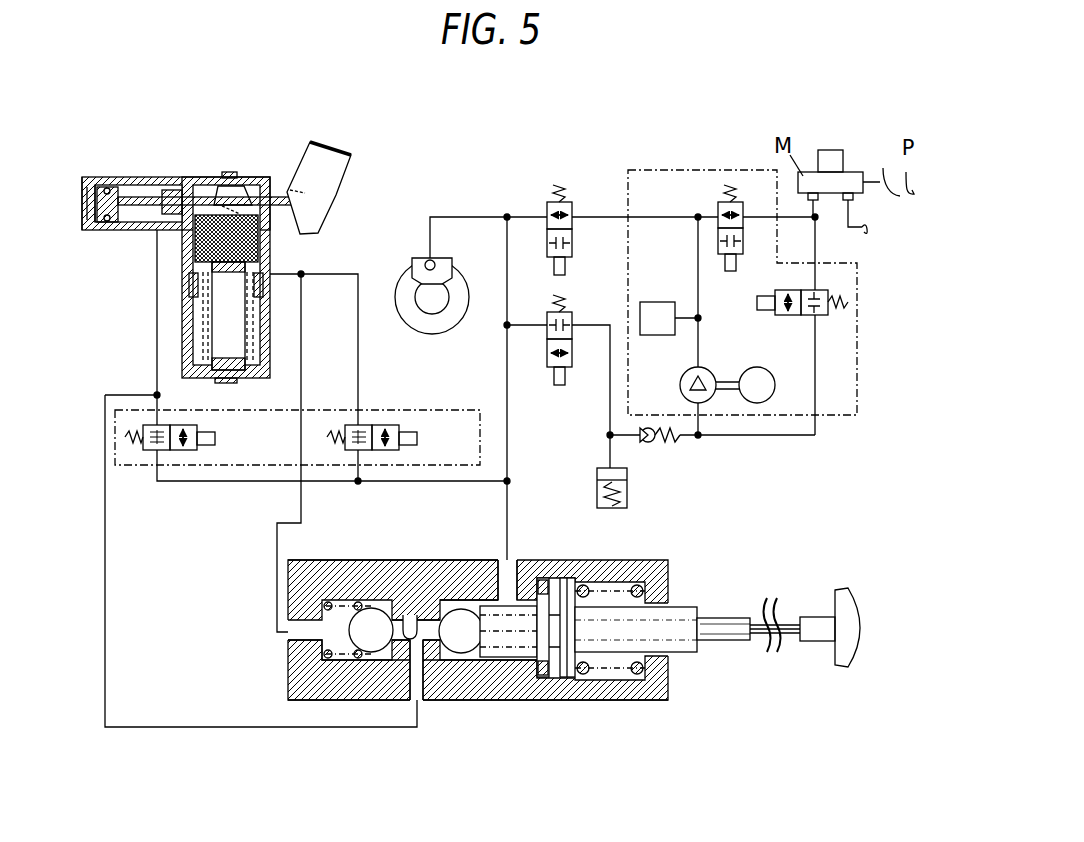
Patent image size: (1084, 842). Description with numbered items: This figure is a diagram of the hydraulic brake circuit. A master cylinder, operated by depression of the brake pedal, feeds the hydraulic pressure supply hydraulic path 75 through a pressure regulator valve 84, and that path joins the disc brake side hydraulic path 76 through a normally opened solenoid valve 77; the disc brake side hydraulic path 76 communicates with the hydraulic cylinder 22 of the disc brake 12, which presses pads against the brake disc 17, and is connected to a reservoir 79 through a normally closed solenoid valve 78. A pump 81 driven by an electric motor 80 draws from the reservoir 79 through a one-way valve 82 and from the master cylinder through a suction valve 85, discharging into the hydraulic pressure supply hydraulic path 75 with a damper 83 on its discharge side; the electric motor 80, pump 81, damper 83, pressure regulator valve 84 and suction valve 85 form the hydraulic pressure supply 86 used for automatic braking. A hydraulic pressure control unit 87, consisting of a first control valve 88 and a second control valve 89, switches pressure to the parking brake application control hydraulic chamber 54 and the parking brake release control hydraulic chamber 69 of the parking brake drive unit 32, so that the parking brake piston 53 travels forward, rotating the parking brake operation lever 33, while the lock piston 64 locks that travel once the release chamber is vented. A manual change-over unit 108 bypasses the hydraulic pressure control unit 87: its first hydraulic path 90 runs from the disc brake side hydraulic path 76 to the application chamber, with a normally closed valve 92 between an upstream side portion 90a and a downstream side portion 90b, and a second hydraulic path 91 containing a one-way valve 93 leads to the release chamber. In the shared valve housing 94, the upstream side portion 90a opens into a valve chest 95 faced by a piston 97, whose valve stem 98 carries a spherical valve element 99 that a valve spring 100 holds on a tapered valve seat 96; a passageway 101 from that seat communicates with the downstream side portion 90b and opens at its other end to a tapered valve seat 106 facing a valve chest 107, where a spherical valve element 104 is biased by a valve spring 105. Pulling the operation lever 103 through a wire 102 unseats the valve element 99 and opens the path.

The parking brake drive unit 32 is at (150, 177).
The parking brake operation lever 33 is at (315, 166).
The parking brake piston 53 is at (83, 232).
The parking brake application control hydraulic chamber 54 is at (138, 228).
The lock piston 64 is at (272, 241).
The parking brake release control hydraulic chamber 69 is at (272, 262).
The disc brake 12 is at (418, 258).
The brake disc 17 is at (440, 328).
The hydraulic cylinder 22 is at (438, 264).
The hydraulic pressure supply hydraulic path 75 is at (607, 216).
The disc brake side hydraulic path 76 is at (521, 216).
The normally opened solenoid valve 77 is at (547, 212).
The normally closed solenoid valve 78 is at (547, 322).
The reservoir 79 is at (628, 478).
The electric motor 80 is at (762, 368).
The pump 81 is at (682, 385).
The one-way valve 82 is at (655, 442).
The damper 83 is at (661, 302).
The pressure regulator valve 84 is at (718, 213).
The suction valve 85 is at (787, 290).
The hydraulic pressure supply 86 is at (832, 418).
The hydraulic pressure control unit 87 is at (428, 408).
The first control valve 88 is at (213, 450).
The second control valve 89 is at (418, 450).
The first hydraulic path 90 is at (430, 727).
The upstream side portion 90a is at (509, 520).
The downstream side portion 90b is at (108, 705).
The second hydraulic path 91 is at (277, 552).
The normally closed valve 92 is at (496, 556).
The one-way valve 93 is at (378, 556).
The valve housing 94 is at (428, 556).
The valve chest 95 is at (530, 572).
The tapered valve seat 96 is at (445, 593).
The piston 97 is at (572, 578).
The valve stem 98 is at (610, 633).
The spherical valve element 99 is at (470, 640).
The valve spring 100 is at (642, 560).
The passageway 101 is at (412, 600).
The wire 102 is at (780, 625).
The operation lever 103 is at (845, 600).
The spherical valve element 104 is at (372, 652).
The valve spring 105 is at (290, 680).
The tapered valve seat 106 is at (372, 606).
The valve chest 107 is at (290, 650).
The manual change-over unit 108 is at (540, 703).